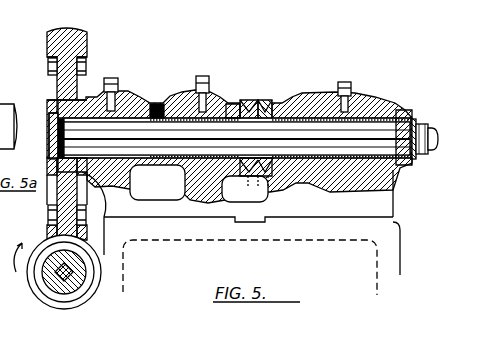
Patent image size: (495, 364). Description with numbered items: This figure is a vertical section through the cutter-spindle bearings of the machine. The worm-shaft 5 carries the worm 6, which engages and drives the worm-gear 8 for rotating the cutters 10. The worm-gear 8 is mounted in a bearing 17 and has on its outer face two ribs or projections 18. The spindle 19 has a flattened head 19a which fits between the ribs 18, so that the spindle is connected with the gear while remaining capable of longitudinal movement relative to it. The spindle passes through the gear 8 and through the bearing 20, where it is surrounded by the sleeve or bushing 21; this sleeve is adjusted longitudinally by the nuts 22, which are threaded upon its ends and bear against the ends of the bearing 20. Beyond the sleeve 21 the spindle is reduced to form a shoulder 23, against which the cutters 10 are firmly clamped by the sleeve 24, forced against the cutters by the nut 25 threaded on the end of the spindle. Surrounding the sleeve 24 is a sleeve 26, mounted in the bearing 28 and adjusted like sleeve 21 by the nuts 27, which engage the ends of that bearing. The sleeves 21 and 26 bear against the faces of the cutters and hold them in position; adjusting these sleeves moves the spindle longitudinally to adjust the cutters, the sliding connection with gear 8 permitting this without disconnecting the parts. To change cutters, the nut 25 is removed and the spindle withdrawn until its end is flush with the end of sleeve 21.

The worm-shaft 5 is at (56, 283).
The worm 6 is at (72, 300).
The worm-gear 8 is at (86, 60).
The cutters 10 is at (262, 184).
The bearing 17 is at (120, 94).
The ribs or projections 18 is at (49, 106).
The spindle 19 is at (162, 138).
The flattened head 19a is at (52, 130).
The bearing 20 is at (235, 104).
The sleeve or bushing 21 is at (180, 100).
The nuts 22 is at (160, 104).
The shoulder 23 is at (278, 100).
The sleeve 24 is at (408, 112).
The nut 25 is at (436, 132).
The sleeve 26 is at (422, 124).
The nuts 27 is at (302, 98).
The bearing 28 is at (365, 105).